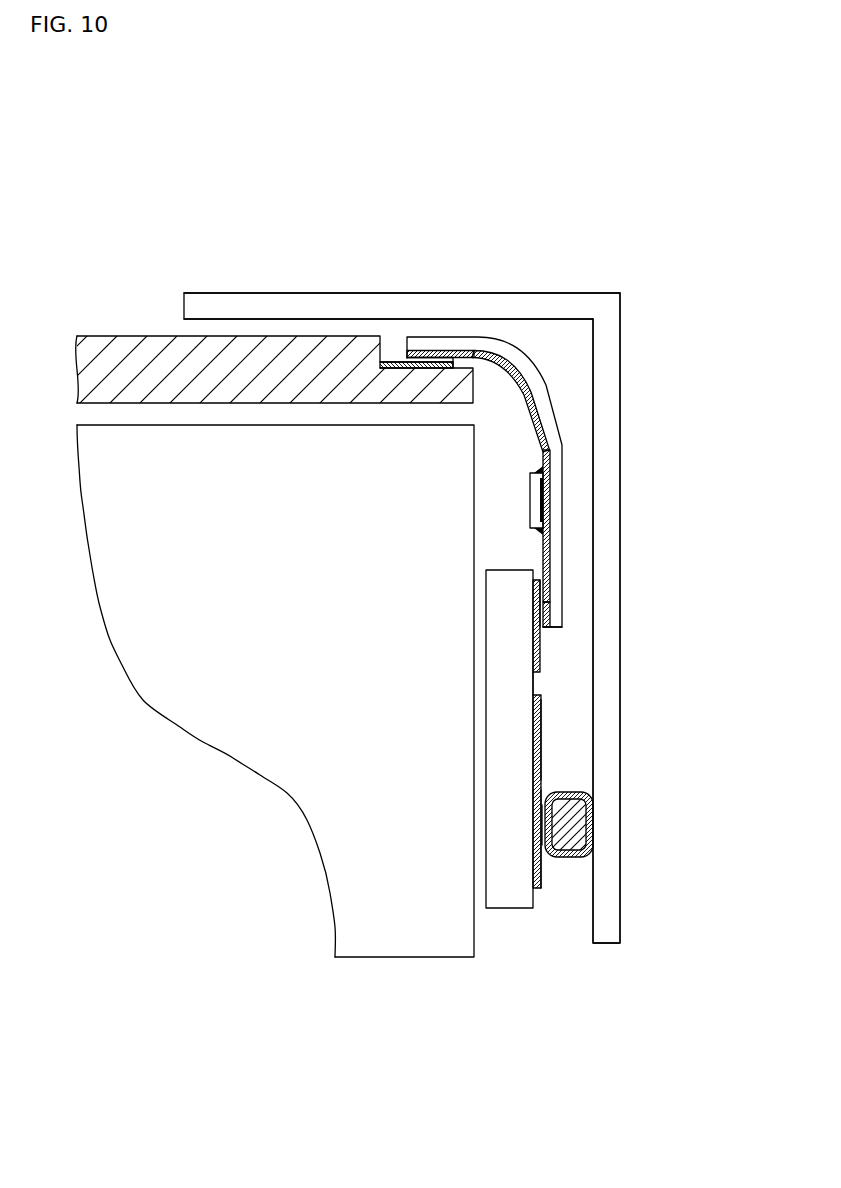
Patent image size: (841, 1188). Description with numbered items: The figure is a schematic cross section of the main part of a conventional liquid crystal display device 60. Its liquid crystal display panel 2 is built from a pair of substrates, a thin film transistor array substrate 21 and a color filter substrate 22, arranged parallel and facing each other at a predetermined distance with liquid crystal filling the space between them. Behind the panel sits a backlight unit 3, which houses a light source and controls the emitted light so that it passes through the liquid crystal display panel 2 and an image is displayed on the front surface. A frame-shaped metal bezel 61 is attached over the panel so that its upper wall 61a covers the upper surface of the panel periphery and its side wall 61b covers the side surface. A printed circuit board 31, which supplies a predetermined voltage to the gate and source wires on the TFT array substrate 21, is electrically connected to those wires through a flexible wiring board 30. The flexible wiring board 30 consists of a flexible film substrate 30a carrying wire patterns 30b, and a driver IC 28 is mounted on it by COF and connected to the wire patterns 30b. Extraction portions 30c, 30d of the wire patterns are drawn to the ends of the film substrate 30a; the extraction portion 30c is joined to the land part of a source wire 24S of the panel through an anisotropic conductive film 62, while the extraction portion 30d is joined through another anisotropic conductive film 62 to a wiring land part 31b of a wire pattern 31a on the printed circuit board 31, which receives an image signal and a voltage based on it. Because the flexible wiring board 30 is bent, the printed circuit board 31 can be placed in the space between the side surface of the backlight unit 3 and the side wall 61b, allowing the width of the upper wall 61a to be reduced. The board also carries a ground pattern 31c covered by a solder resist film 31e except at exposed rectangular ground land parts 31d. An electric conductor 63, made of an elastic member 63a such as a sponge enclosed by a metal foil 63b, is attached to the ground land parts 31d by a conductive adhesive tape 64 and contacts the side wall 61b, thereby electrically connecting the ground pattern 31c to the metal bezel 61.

The liquid crystal display panel 2 is at (253, 316).
The backlight unit 3 is at (255, 748).
The thin film transistor (TFT) array substrate 21 is at (101, 386).
The color filter (CF) substrate 22 is at (133, 346).
The source wire 24S is at (392, 358).
The driver IC 28 is at (530, 500).
The flexible wiring board 30 is at (539, 429).
The film substrate 30a is at (552, 450).
The wire pattern 30b is at (522, 410).
The extraction portion 30c is at (422, 350).
The extraction portion 30d is at (548, 609).
The printed circuit board 31 is at (507, 914).
The wire pattern 31a is at (543, 662).
The wiring land part 31b is at (535, 601).
The ground pattern 31c is at (537, 772).
The ground land part 31d is at (553, 790).
The solder resist film 31e is at (543, 745).
The liquid crystal display device 60 is at (452, 607).
The metal bezel 61 is at (479, 290).
The upper wall 61a is at (527, 301).
The side wall 61b is at (606, 517).
The anisotropic conductive film 62 is at (463, 360).
The electric conductor 63 is at (630, 851).
The elastic member 63a is at (582, 840).
The metal foil 63b is at (577, 857).
The conductive adhesive tape 64 is at (541, 838).